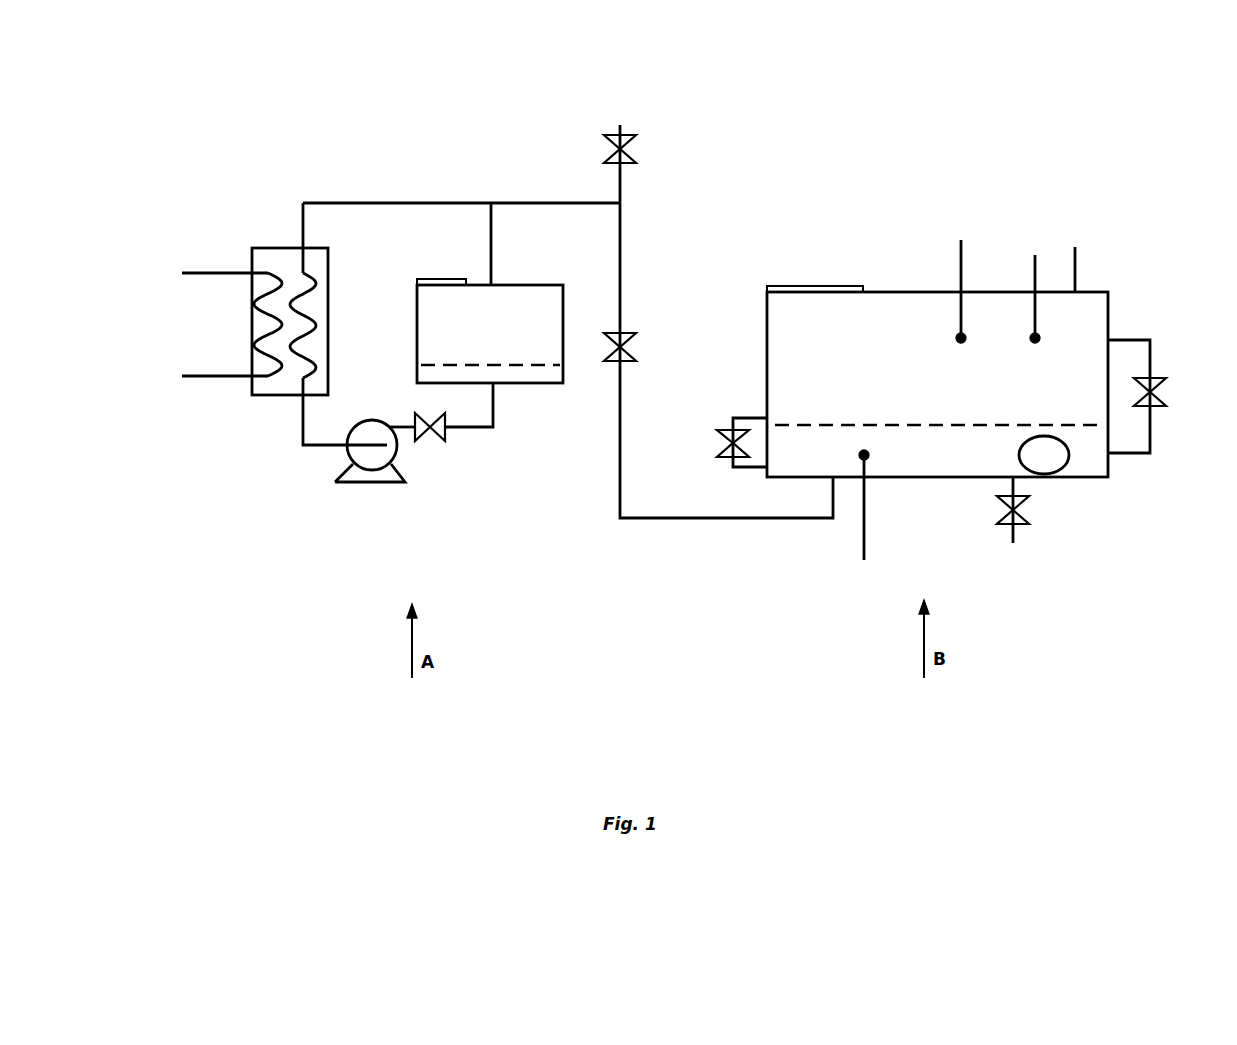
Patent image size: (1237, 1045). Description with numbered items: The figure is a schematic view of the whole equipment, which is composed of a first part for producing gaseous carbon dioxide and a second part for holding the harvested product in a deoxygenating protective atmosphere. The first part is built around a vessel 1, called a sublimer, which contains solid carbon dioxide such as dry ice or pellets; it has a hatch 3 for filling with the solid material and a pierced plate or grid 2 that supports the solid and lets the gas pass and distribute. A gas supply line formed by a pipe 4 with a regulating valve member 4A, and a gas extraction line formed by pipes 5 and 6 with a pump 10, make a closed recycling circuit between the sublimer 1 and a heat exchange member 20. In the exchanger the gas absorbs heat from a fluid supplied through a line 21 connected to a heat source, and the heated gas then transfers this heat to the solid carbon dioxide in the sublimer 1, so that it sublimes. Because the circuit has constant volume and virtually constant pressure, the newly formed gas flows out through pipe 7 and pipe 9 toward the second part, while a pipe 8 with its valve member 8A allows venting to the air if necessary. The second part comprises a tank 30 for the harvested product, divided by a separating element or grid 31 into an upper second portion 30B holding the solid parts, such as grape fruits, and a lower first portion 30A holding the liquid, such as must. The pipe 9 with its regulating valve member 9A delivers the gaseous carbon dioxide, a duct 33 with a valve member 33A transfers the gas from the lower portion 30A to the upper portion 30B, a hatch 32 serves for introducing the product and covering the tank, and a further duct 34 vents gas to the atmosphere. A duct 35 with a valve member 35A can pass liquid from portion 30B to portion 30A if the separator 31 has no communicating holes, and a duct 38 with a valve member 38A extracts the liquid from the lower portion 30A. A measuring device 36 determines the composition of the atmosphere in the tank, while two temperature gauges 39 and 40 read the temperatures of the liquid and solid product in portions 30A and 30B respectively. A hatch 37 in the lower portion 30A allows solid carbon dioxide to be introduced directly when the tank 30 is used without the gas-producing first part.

The vessel 1 is at (446, 322).
The pierced plate or grid 2 is at (512, 365).
The hatch 3 is at (448, 281).
The pipe 4 is at (477, 428).
The valve member 4A is at (420, 432).
The pipe 5 is at (493, 232).
The pipe 6 is at (400, 200).
The pipe 7 is at (512, 203).
The pipe 8 is at (624, 180).
The valve member 8A is at (603, 142).
The pipe 9 is at (623, 276).
The regulating valve member 9A is at (628, 330).
The pump 10 is at (350, 455).
The heat exchange member 20 is at (278, 263).
The line 21 is at (208, 273).
The tank 30 is at (926, 290).
The first portion of the tank 30A is at (976, 437).
The second portion of the tank 30B is at (920, 368).
The separating element or grid 31 is at (853, 431).
The hatch 32 is at (800, 286).
The duct 33 is at (1126, 338).
The valve member 33A is at (1158, 380).
The duct 34 is at (1077, 272).
The duct 35 is at (745, 414).
The valve member 35A is at (725, 438).
The measuring device 36 is at (963, 250).
The hatch 37 is at (1068, 460).
The duct 38 is at (1015, 530).
The valve member 38A is at (1020, 507).
The temperature gauge 39 is at (860, 518).
The temperature gauge 40 is at (1036, 258).